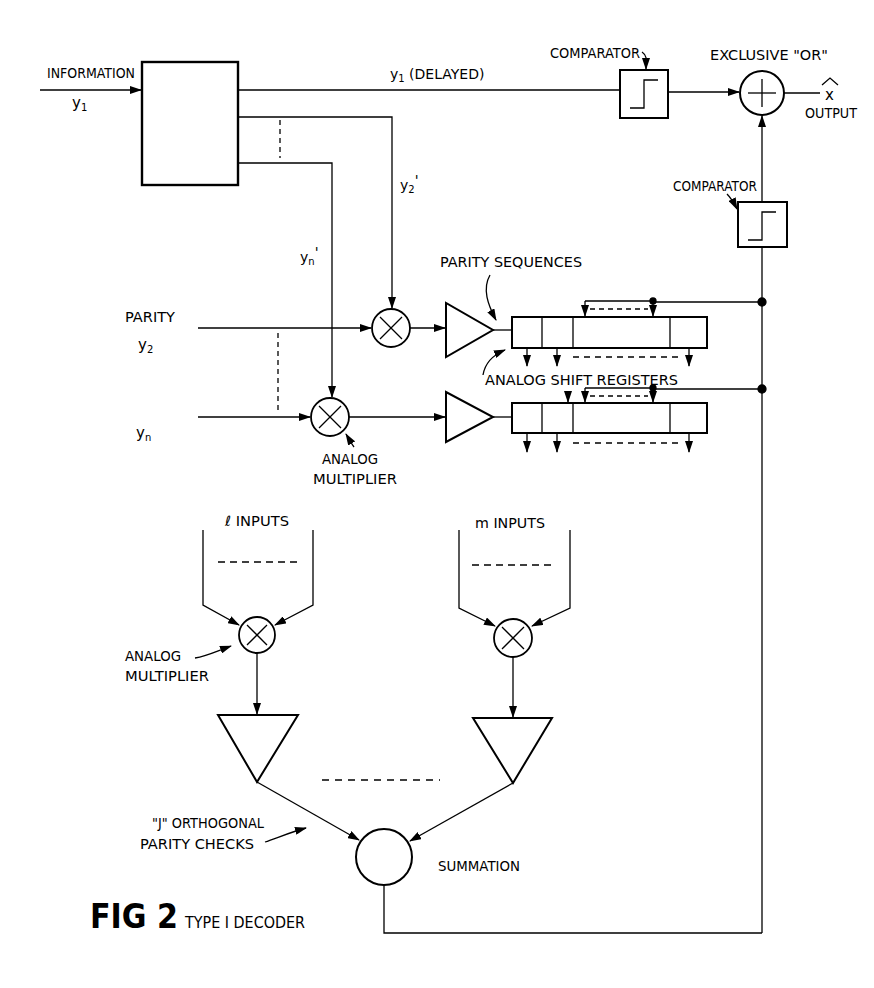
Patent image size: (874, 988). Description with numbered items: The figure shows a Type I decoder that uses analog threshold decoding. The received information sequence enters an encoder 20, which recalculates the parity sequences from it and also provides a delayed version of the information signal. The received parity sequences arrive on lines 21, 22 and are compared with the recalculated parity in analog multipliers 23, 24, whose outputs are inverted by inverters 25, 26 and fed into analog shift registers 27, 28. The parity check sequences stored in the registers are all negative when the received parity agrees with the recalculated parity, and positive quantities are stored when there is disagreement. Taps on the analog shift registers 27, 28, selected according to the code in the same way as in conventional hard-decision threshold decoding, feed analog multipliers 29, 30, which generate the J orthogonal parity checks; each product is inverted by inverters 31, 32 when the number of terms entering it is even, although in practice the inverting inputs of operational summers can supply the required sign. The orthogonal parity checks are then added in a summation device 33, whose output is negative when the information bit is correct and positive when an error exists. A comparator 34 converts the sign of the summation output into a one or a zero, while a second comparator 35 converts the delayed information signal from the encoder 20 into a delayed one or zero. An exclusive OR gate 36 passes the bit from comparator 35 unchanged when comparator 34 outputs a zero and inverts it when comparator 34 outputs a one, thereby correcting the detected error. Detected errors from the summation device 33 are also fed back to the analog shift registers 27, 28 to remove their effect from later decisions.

The encoder 20 is at (166, 61).
The line 21 is at (239, 323).
The line 22 is at (239, 412).
The analog multiplier 23 is at (384, 347).
The analog multiplier 24 is at (314, 431).
The inverter 25 is at (445, 350).
The inverter 26 is at (447, 441).
The analog shift register 27 is at (708, 340).
The analog shift register 28 is at (708, 413).
The analog multiplier 29 is at (271, 651).
The analog multiplier 30 is at (528, 653).
The inverter 31 is at (279, 752).
The inverter 32 is at (490, 760).
The summation device 33 is at (354, 863).
The comparator 34 is at (737, 230).
The comparator 35 is at (626, 118).
The exclusive OR gate 36 is at (747, 113).